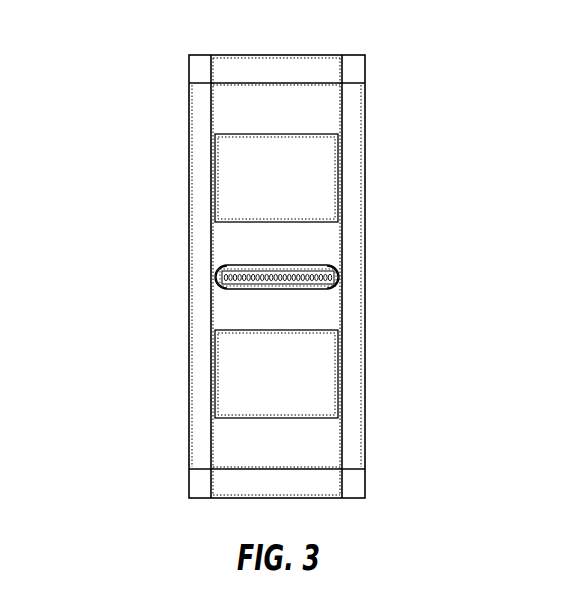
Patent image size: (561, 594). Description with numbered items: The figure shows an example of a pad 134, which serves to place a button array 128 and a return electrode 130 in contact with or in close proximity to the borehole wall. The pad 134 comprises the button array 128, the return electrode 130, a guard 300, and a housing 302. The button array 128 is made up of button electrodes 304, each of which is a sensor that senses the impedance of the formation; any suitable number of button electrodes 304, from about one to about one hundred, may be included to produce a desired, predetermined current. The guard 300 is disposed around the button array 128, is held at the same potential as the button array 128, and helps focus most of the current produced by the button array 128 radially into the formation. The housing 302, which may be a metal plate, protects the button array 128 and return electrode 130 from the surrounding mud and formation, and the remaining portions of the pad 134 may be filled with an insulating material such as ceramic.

The pad 134 is at (121, 117).
The housing 302 is at (376, 71).
The return electrode 130 is at (327, 180).
The button array 128 is at (232, 258).
The guard 300 is at (227, 289).
The button electrode 304 is at (325, 289).